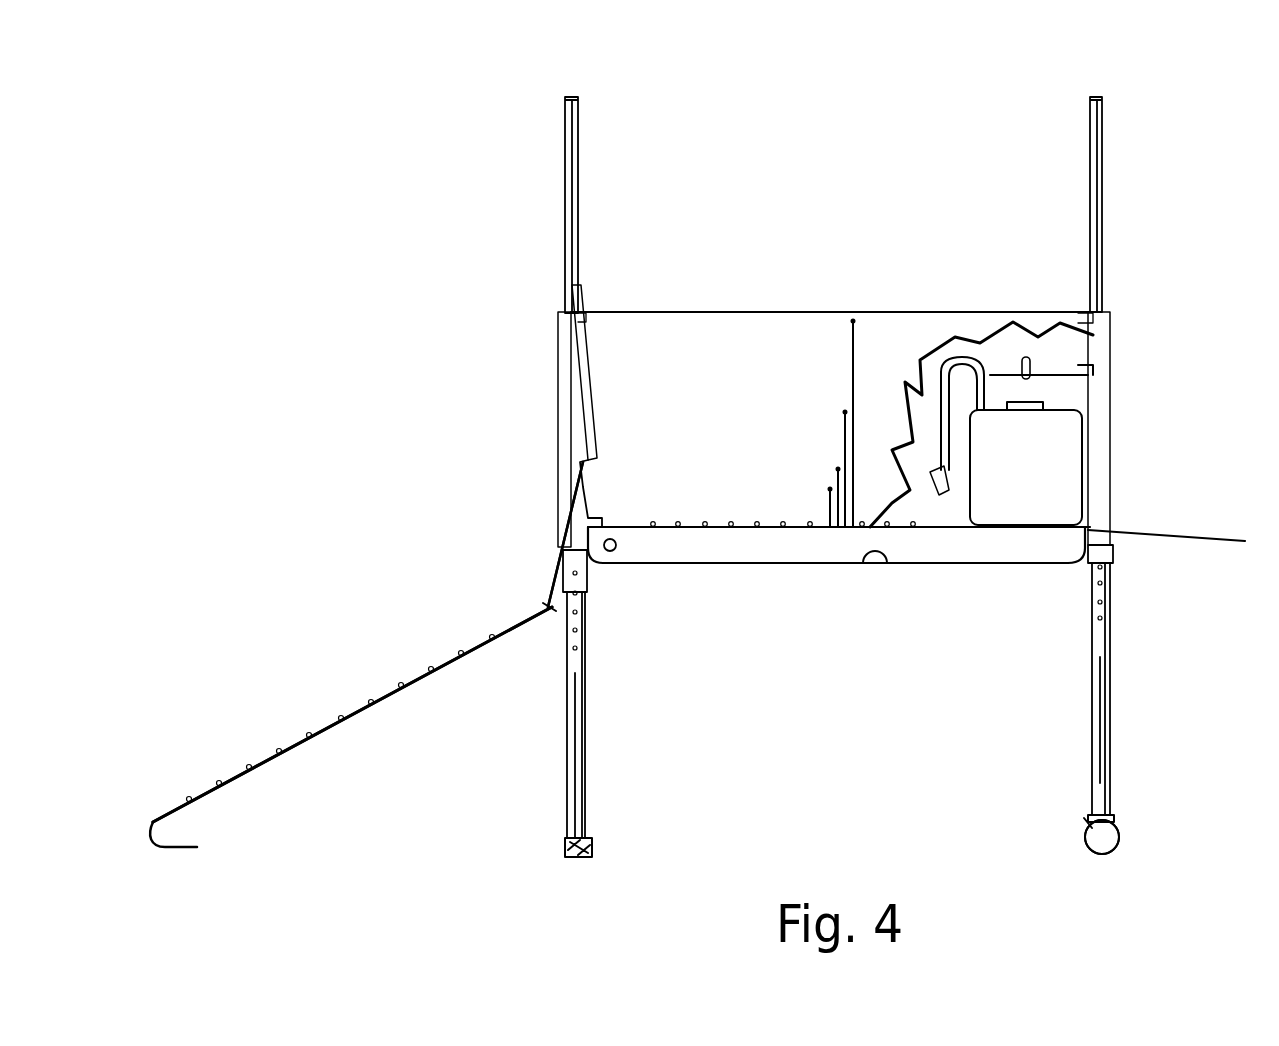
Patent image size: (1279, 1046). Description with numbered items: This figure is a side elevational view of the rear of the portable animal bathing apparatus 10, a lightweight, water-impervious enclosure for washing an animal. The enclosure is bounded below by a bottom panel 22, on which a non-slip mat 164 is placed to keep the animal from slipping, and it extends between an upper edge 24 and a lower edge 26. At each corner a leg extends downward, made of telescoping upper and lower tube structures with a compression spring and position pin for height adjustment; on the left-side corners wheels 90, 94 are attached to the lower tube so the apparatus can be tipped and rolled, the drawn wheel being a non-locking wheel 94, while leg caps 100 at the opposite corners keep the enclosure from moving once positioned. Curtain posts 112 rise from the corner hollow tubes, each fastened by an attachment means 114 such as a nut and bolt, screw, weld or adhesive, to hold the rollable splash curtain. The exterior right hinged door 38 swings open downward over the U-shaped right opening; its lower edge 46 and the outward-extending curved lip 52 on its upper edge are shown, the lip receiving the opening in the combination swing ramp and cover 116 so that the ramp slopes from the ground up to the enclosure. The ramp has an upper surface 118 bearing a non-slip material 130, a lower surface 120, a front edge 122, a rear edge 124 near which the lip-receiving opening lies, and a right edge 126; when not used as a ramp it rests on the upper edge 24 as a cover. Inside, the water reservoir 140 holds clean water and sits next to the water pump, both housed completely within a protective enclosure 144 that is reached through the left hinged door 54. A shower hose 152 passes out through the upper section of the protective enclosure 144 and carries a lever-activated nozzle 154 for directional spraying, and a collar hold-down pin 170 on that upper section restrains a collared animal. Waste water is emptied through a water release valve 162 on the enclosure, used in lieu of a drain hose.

The portable animal bathing apparatus 10 is at (1232, 50).
The bottom panel 22 is at (866, 565).
The upper edge 24 is at (1000, 310).
The lower edge 26 is at (1025, 568).
The right hinged door 38 is at (568, 508).
The lower edge 46 is at (552, 607).
The curved lip 52 is at (565, 534).
The left hinged door 54 is at (1212, 543).
The wheel 90 is at (1116, 838).
The non-locking wheels 94 is at (1102, 837).
The leg caps 100 is at (565, 850).
The curtain posts 112 is at (567, 145).
The attachment means 114 is at (565, 313).
The swing ramp and cover 116 is at (448, 656).
The upper surface 118 is at (352, 714).
The lower surface 120 is at (327, 728).
The front edge 122 is at (201, 838).
The rear edge 124 is at (548, 607).
The right edge 126 is at (357, 712).
The non-slip material 130 is at (310, 730).
The water reservoir 140 is at (1048, 442).
The protective enclosure 144 is at (1043, 372).
The shower hose 152 is at (990, 395).
The lever-activated nozzle 154 is at (947, 472).
The water release valve 162 is at (613, 551).
The non-slip mat 164 is at (735, 527).
The collar hold-down pin 170 is at (1040, 340).